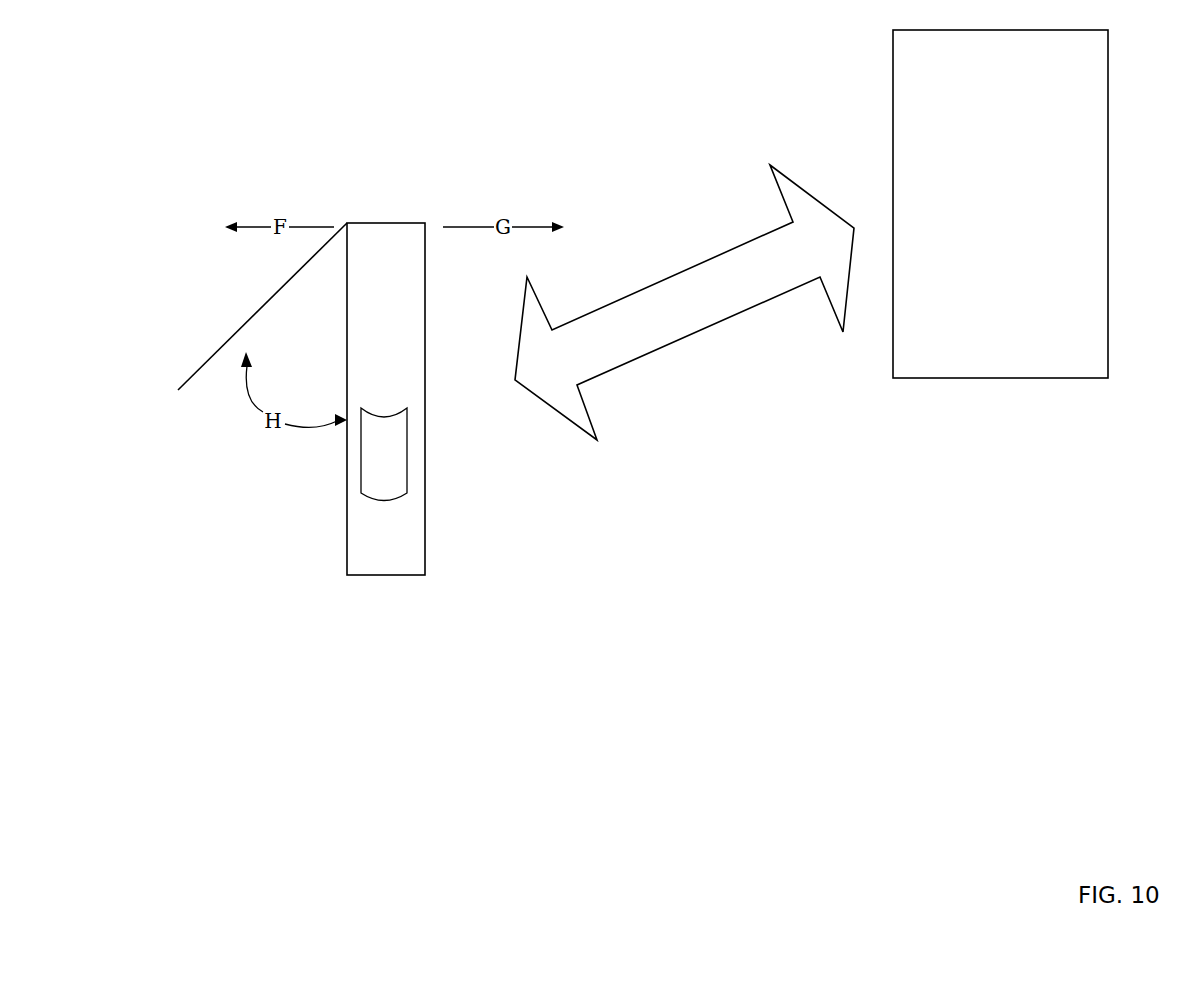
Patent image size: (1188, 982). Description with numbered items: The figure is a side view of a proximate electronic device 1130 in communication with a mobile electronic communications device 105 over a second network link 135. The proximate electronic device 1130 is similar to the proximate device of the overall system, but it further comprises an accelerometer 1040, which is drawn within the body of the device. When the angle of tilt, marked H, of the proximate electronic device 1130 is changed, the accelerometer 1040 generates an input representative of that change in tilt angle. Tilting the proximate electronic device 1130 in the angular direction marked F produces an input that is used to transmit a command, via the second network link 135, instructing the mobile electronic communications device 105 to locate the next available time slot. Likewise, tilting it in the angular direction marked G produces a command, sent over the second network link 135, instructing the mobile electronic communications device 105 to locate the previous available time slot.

The mobile electronic communications device 105 is at (1000, 204).
The second network link 135 is at (684, 302).
The accelerometer 1040 is at (384, 454).
The proximate electronic device 1130 is at (282, 638).